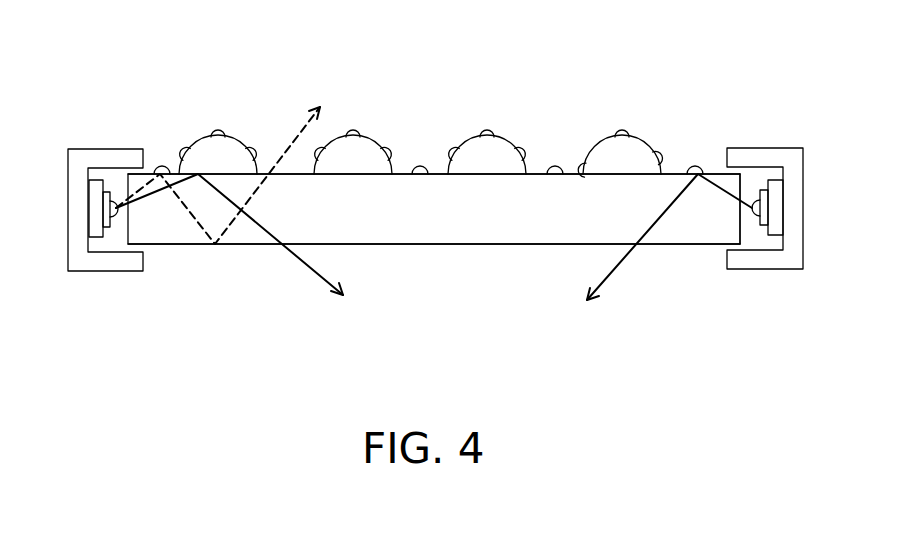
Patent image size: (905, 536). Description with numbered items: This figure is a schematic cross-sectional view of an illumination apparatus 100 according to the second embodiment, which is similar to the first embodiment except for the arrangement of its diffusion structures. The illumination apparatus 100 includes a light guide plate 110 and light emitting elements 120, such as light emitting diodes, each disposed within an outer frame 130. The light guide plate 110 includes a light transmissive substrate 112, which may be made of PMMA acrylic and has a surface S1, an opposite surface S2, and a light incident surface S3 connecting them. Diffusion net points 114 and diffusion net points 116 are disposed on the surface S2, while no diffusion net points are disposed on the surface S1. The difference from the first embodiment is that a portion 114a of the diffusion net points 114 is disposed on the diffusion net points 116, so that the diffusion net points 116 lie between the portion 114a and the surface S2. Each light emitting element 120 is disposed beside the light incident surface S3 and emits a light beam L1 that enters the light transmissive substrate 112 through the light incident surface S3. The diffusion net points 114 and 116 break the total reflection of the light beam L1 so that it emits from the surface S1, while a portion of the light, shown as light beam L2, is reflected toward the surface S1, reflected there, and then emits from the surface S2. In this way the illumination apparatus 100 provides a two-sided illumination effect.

The illumination apparatus 100 is at (808, 393).
The light guide plate 110 is at (498, 50).
The light transmissive substrate 112 is at (533, 203).
The diffusion net points 114 is at (450, 152).
The portion of the diffusion net points 114a is at (618, 130).
The diffusion net points 116 is at (475, 152).
The light emitting element 120 is at (113, 218).
The outer frame 130 is at (73, 237).
The surface S1 is at (692, 246).
The surface S2 is at (678, 172).
The light incident surface S3 is at (741, 229).
The light beam L1 is at (300, 262).
The light beam L2 is at (290, 132).